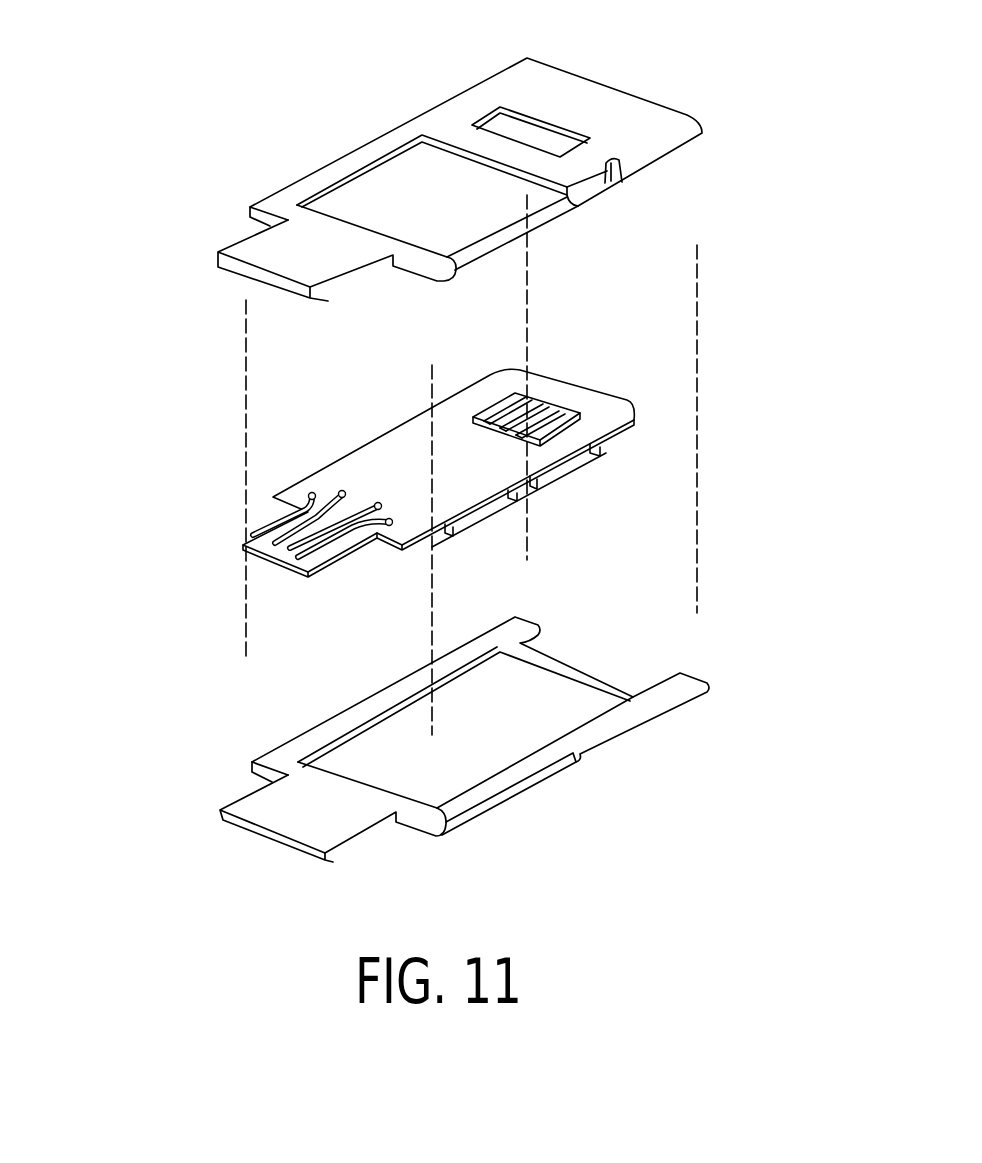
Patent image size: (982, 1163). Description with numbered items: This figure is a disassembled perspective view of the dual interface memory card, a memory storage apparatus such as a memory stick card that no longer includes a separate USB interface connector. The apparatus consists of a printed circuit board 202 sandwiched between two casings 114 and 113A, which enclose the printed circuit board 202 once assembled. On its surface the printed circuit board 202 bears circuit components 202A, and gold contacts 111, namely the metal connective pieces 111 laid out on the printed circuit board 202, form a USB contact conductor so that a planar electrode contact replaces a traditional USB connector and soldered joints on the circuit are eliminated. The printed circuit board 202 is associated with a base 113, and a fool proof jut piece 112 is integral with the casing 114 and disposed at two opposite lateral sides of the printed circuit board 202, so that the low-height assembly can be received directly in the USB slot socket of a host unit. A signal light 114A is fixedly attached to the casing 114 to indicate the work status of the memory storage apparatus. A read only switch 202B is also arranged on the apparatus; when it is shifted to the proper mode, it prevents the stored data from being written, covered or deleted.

The casing 114 is at (434, 157).
The signal light 114A is at (620, 167).
The fool proof jut piece 112 is at (250, 235).
The printed circuit board 202 is at (413, 448).
The circuit components 202A is at (488, 510).
The read only switch 202B is at (546, 402).
The metal connective pieces 111 is at (297, 528).
The base 113 is at (408, 739).
The casing 113A is at (373, 752).